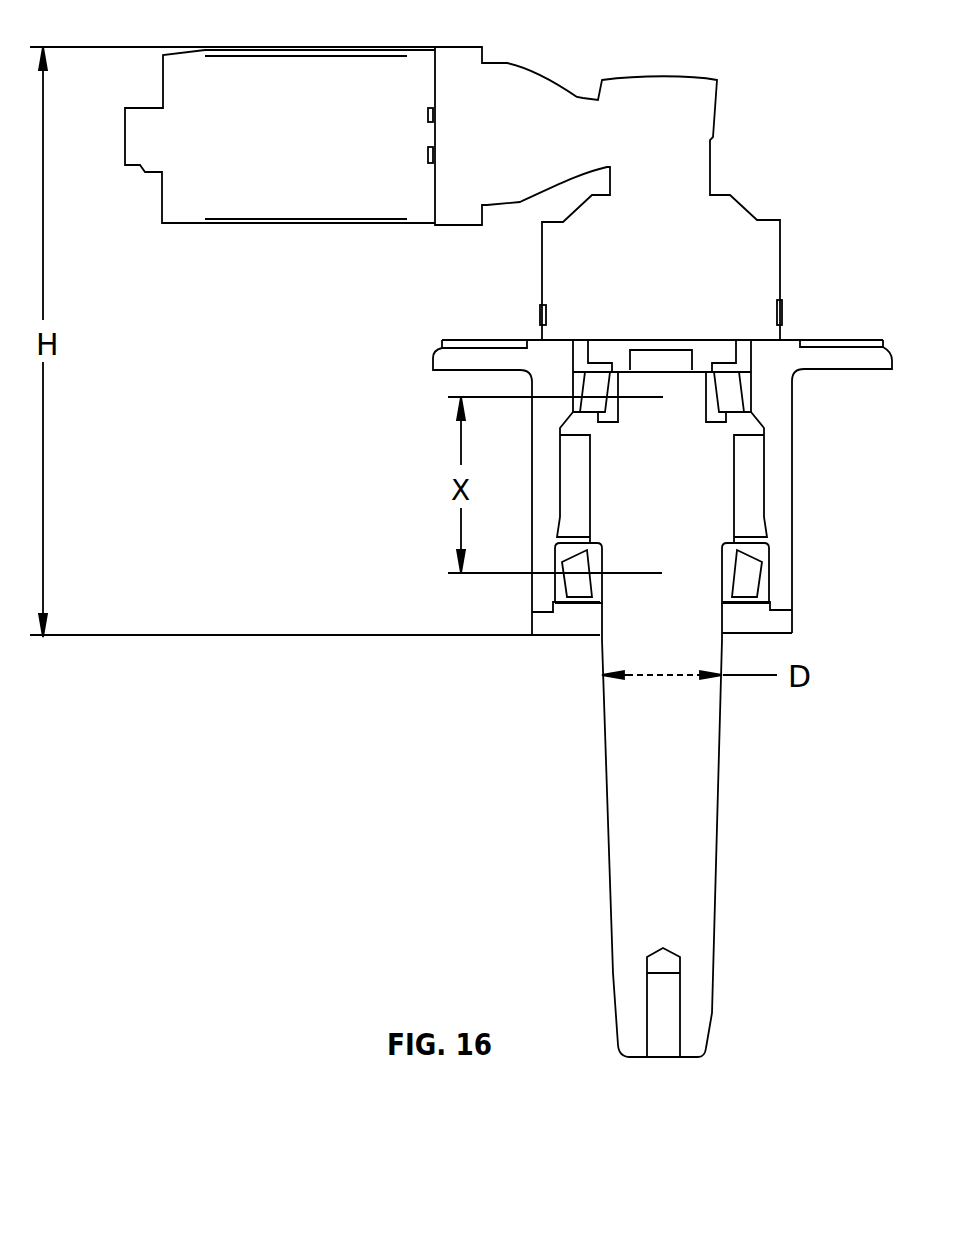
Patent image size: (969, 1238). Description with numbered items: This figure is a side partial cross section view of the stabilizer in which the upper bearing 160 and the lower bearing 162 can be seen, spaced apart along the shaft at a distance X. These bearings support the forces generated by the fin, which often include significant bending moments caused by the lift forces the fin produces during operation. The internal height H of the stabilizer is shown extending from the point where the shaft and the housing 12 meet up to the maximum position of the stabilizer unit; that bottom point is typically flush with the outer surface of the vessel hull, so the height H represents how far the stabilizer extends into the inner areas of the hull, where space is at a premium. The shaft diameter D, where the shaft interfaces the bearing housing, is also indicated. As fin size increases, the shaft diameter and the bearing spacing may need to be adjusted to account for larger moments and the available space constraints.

The housing 12 is at (532, 612).
The upper bearing 160 is at (595, 383).
The lower bearing 162 is at (572, 582).